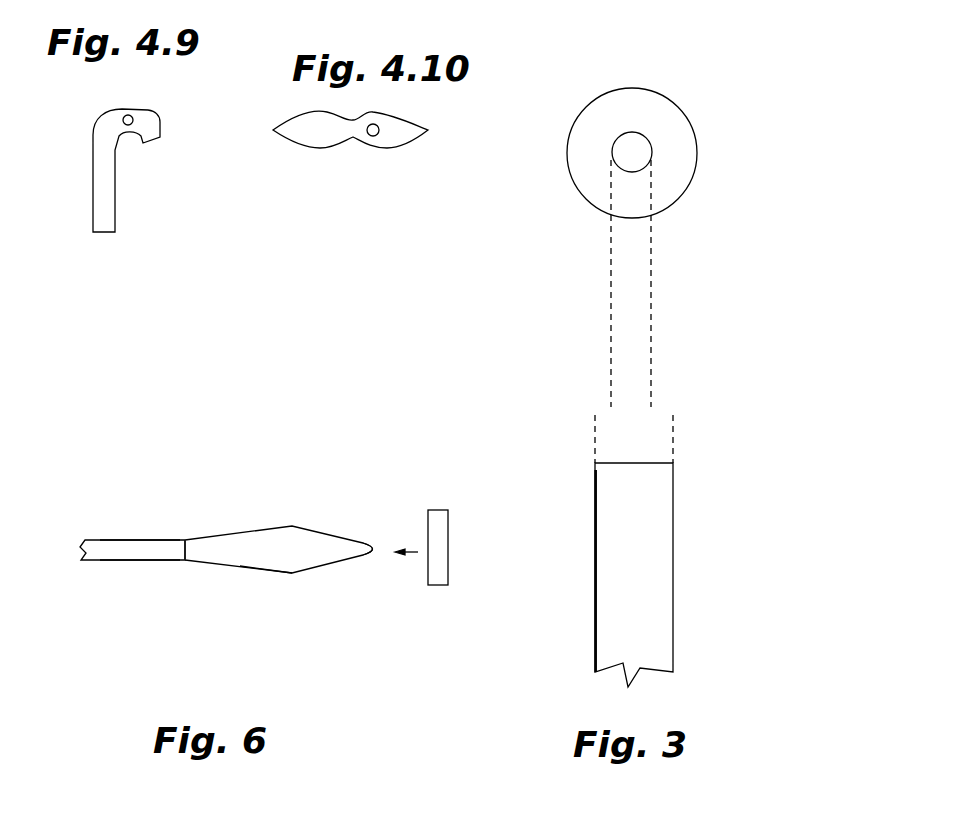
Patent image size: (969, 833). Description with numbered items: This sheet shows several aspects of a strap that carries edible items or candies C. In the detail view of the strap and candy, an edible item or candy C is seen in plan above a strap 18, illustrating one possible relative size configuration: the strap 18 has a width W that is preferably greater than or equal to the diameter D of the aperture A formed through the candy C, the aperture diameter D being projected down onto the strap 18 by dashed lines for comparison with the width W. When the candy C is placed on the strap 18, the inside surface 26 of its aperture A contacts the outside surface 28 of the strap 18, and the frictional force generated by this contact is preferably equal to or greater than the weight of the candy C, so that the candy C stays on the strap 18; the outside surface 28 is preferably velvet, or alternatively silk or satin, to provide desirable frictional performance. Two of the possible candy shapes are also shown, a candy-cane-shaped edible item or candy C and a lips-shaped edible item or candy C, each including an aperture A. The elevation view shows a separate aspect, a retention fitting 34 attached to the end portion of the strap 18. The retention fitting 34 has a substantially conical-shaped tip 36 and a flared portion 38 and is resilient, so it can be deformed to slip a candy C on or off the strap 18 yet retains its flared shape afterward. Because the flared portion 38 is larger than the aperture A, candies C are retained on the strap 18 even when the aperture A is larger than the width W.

In FIG. 3, the strap 18 is at (676, 600).
In FIG. 6, the strap 18 is at (133, 561).
In FIG. 3, the inside surface 26 is at (630, 138).
In FIG. 3, the outside surface 28 is at (674, 535).
In FIG. 6, the retention fitting 34 is at (329, 503).
In FIG. 6, the conical-shaped tip 36 is at (359, 563).
In FIG. 6, the flared portion 38 is at (290, 575).
In FIG. 4.9, the aperture A is at (134, 120).
In FIG. 4.10, the aperture A is at (380, 126).
In FIG. 3, the aperture A is at (643, 170).
In FIG. 4.9, the edible item or candy C is at (112, 112).
In FIG. 4.10, the edible item or candy C is at (320, 150).
In FIG. 3, the edible item or candy C is at (697, 114).
In FIG. 6, the edible item or candy C is at (437, 587).
In FIG. 3, the diameter D is at (755, 292).
In FIG. 3, the width W is at (778, 440).